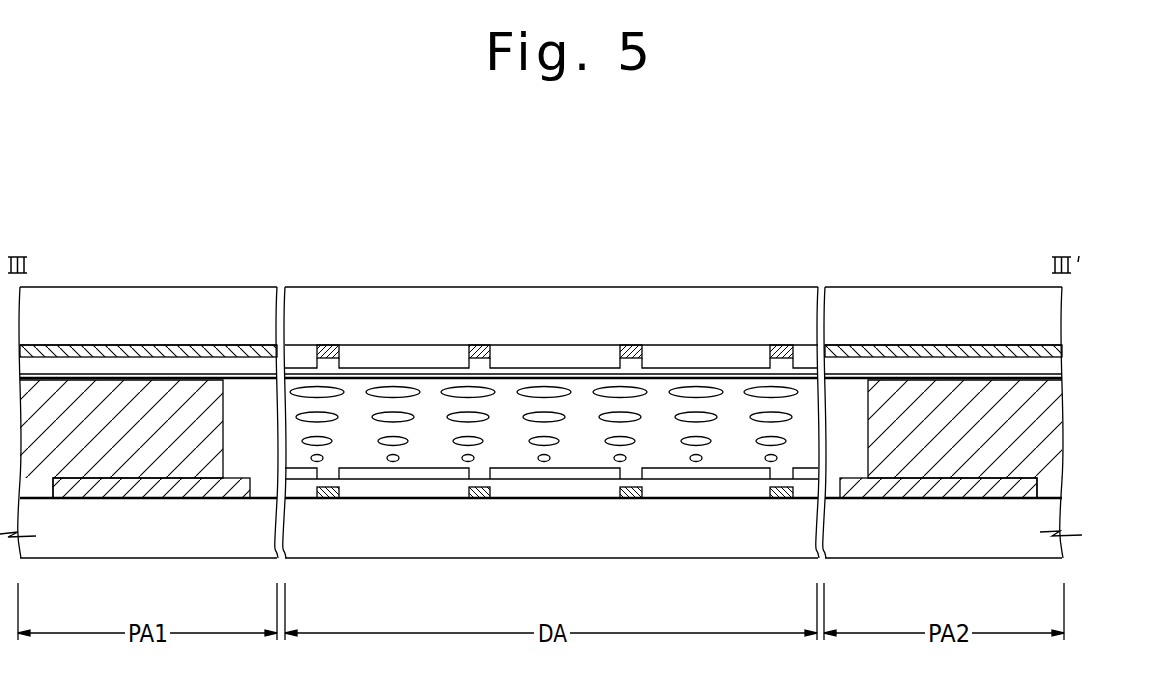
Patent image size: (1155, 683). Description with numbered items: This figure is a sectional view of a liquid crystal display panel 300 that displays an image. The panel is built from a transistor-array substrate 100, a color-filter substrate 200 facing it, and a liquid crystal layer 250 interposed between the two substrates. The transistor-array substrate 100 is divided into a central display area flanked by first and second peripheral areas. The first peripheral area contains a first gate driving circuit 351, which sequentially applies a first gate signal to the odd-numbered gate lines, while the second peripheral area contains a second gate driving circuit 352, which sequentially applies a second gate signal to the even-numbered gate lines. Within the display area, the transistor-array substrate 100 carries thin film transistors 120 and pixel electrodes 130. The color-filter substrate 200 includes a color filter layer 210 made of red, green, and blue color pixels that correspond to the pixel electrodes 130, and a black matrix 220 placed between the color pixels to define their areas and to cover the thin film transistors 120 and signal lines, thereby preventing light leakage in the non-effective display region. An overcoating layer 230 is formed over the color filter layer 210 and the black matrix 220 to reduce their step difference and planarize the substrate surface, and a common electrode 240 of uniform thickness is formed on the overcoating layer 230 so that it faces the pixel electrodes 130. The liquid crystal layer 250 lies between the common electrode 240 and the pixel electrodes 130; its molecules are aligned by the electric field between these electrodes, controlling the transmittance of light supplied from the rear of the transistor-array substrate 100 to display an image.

The liquid crystal display panel 300 is at (870, 174).
The color-filter substrate 200 is at (1080, 287).
The transistor-array substrate 100 is at (1080, 478).
The color filter layer 210 is at (540, 348).
The black matrix 220 is at (478, 348).
The overcoating layer 230 is at (632, 360).
The common electrode 240 is at (686, 377).
The liquid crystal layer 250 is at (762, 387).
The thin film transistor 120 is at (478, 498).
The pixel electrode 130 is at (555, 473).
The first gate driving circuit 351 is at (140, 497).
The second gate driving circuit 352 is at (983, 493).